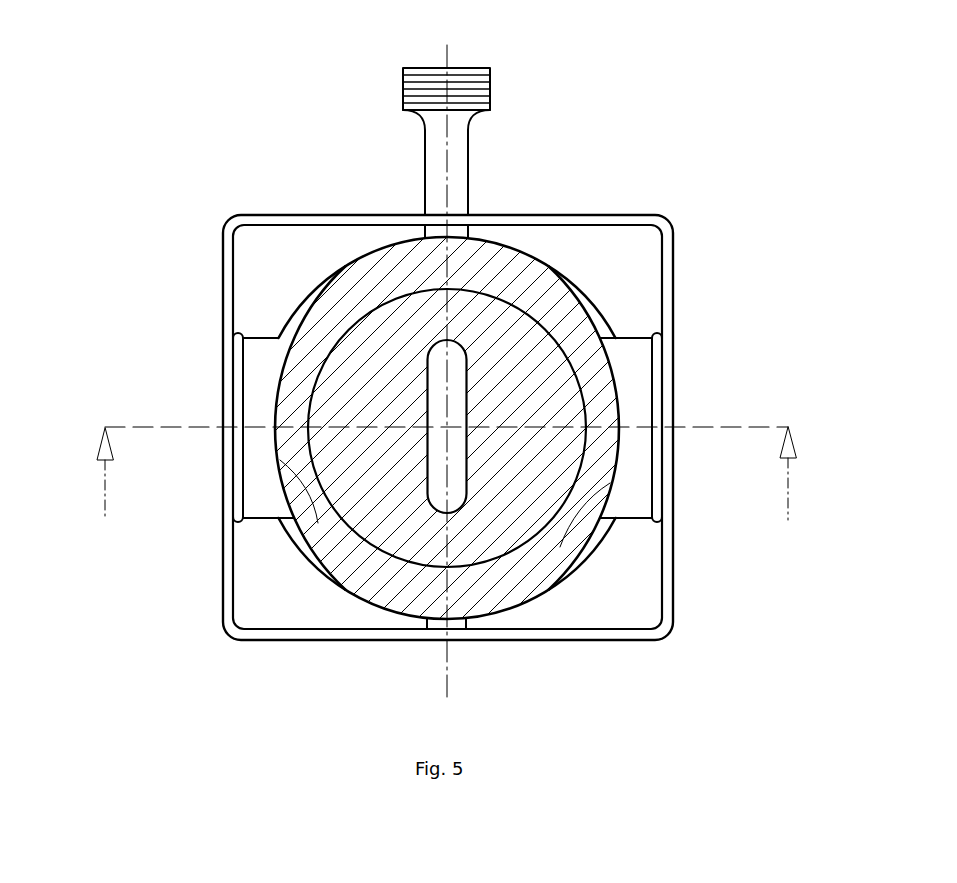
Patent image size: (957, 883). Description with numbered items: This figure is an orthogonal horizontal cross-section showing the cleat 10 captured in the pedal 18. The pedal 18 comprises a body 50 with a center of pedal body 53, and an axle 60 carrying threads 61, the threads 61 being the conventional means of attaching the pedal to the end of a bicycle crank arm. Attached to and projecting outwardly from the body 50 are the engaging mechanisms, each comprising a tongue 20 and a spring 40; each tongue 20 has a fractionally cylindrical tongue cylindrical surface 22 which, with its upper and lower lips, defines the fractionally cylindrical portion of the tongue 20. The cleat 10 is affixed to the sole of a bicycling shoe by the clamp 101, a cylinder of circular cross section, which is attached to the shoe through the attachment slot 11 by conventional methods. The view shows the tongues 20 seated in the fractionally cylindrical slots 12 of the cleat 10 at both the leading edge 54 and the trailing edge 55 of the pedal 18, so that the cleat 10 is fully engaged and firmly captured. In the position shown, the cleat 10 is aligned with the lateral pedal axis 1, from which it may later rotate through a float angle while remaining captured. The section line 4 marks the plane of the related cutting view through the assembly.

The lateral pedal axis 1 is at (458, 386).
The section line 4- 4 is at (450, 496).
The cleat 10 is at (493, 280).
The attachment slot 11 is at (345, 588).
The fractionally cylindrical slot 12 is at (293, 313).
The pedal 18 is at (695, 365).
The tongue 20 is at (262, 403).
The tongue cylindrical surface 22 is at (318, 523).
The spring 40 is at (235, 365).
The body 50 is at (312, 220).
The center of pedal body 53 is at (450, 440).
The leading edge 54 is at (223, 477).
The trailing edge 55 is at (674, 458).
The axle 60 is at (457, 160).
The threads 61 is at (432, 80).
The clamp 101 is at (357, 413).